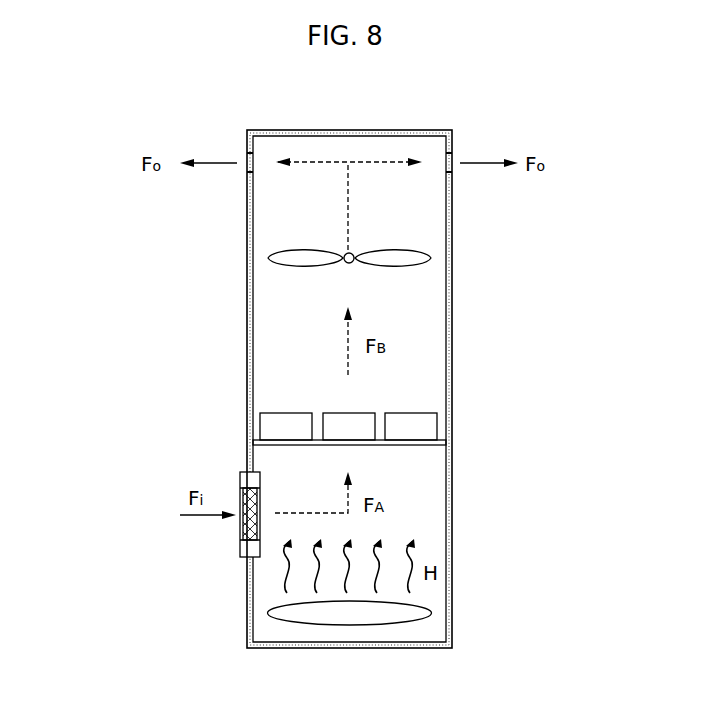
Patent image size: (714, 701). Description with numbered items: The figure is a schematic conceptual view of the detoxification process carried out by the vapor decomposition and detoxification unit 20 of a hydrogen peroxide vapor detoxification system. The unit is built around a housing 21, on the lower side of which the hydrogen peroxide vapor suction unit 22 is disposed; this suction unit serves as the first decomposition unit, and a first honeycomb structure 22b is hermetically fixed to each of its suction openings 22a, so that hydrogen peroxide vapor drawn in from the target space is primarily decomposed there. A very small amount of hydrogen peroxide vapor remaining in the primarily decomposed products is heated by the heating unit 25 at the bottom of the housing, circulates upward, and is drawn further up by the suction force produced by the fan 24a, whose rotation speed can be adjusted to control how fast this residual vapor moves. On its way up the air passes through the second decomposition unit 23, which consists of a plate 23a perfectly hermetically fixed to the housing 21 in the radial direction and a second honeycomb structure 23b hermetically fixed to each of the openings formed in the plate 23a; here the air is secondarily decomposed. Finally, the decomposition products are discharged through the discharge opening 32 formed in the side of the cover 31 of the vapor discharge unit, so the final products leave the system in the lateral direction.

The vapor decomposition and detoxification unit 20 is at (552, 238).
The housing 21 is at (452, 282).
The hydrogen peroxide vapor suction unit 22 is at (148, 509).
The suction openings 22a is at (242, 477).
The first honeycomb structure 22b is at (240, 536).
The second decomposition unit 23 is at (431, 443).
The plate 23a is at (408, 445).
The second honeycomb structure 23b is at (418, 423).
The fan 24a is at (398, 255).
The heating unit 25 is at (427, 617).
The cover 31 is at (382, 131).
The discharge opening 32 is at (246, 157).